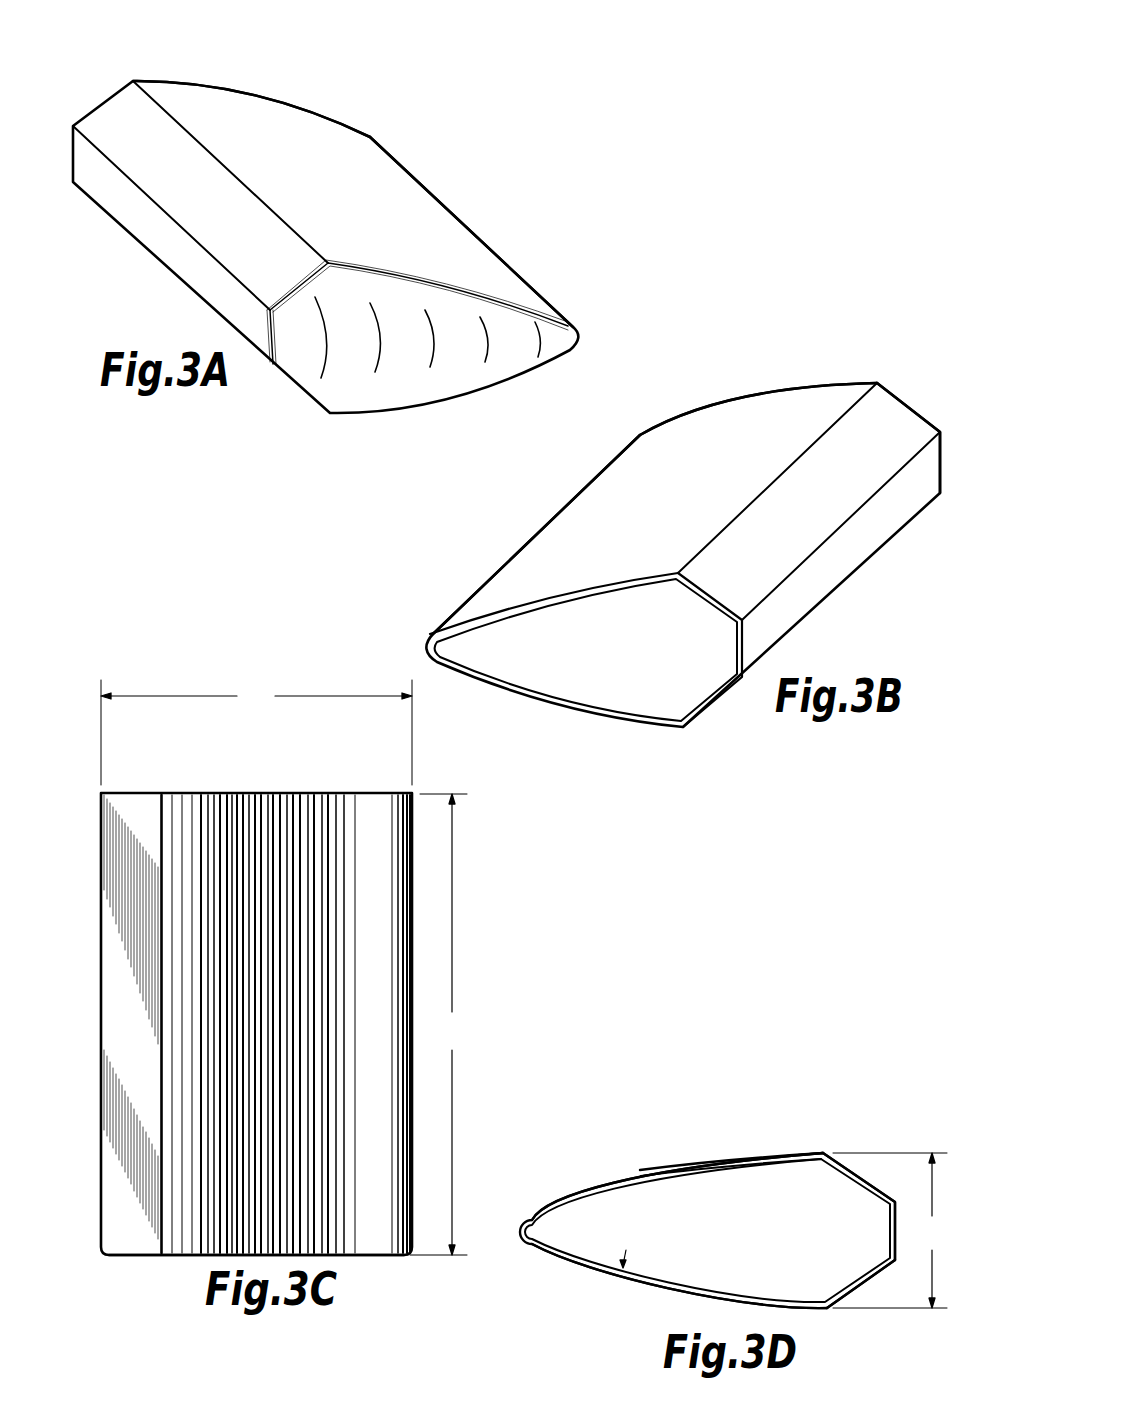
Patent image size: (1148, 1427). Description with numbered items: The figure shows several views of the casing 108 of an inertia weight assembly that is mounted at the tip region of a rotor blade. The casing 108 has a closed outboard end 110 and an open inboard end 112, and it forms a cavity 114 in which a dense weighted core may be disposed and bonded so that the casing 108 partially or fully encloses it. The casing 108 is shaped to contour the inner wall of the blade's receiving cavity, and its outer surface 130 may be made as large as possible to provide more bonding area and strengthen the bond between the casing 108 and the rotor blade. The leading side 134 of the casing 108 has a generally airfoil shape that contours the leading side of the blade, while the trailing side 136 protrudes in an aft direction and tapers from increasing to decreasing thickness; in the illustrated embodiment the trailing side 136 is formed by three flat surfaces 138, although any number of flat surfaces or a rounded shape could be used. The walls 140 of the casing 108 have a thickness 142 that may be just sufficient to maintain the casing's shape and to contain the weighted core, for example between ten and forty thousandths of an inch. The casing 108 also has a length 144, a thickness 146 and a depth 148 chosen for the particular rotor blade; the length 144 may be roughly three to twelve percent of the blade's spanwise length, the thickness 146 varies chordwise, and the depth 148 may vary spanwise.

In FIG. 3A, the casing 108 is at (422, 198).
In FIG. 3B, the casing 108 is at (782, 392).
In FIG. 3C, the casing 108 is at (238, 793).
In FIG. 3D, the casing 108 is at (600, 1183).
In FIG. 3A, the closed outboard end 110 is at (403, 362).
In FIG. 3B, the closed outboard end 110 is at (838, 383).
In FIG. 3C, the closed outboard end 110 is at (173, 1255).
In FIG. 3A, the open inboard end 112 is at (183, 82).
In FIG. 3B, the open inboard end 112 is at (747, 642).
In FIG. 3C, the open inboard end 112 is at (305, 793).
In FIG. 3D, the open inboard end 112 is at (660, 1170).
In FIG. 3B, the cavity 114 is at (602, 668).
In FIG. 3D, the cavity 114 is at (768, 1193).
In FIG. 3A, the outer surface 130 is at (242, 108).
In FIG. 3B, the outer surface 130 is at (695, 435).
In FIG. 3C, the outer surface 130 is at (143, 817).
In FIG. 3D, the outer surface 130 is at (725, 1160).
In FIG. 3A, the leading side 134 is at (462, 247).
In FIG. 3B, the leading side 134 is at (647, 460).
In FIG. 3C, the leading side 134 is at (402, 905).
In FIG. 3D, the leading side 134 is at (558, 1270).
In FIG. 3A, the trailing side 136 is at (110, 113).
In FIG. 3B, the trailing side 136 is at (888, 413).
In FIG. 3C, the trailing side 136 is at (123, 902).
In FIG. 3D, the trailing side 136 is at (867, 1180).
In FIG. 3A, the flat surfaces 138 is at (183, 267).
In FIG. 3B, the flat surfaces 138 is at (920, 420).
In FIG. 3C, the flat surfaces 138 is at (123, 1010).
In FIG. 3D, the flat surfaces 138 is at (867, 1290).
In FIG. 3A, the walls 140 is at (286, 117).
In FIG. 3B, the walls 140 is at (737, 417).
In FIG. 3C, the walls 140 is at (123, 1053).
In FIG. 3D, the walls 140 is at (803, 1152).
In FIG. 3D, the thickness 142 is at (615, 1299).
In FIG. 3C, the length 144 is at (440, 1024).
In FIG. 3D, the thickness 146 is at (891, 1230).
In FIG. 3C, the depth 148 is at (256, 732).